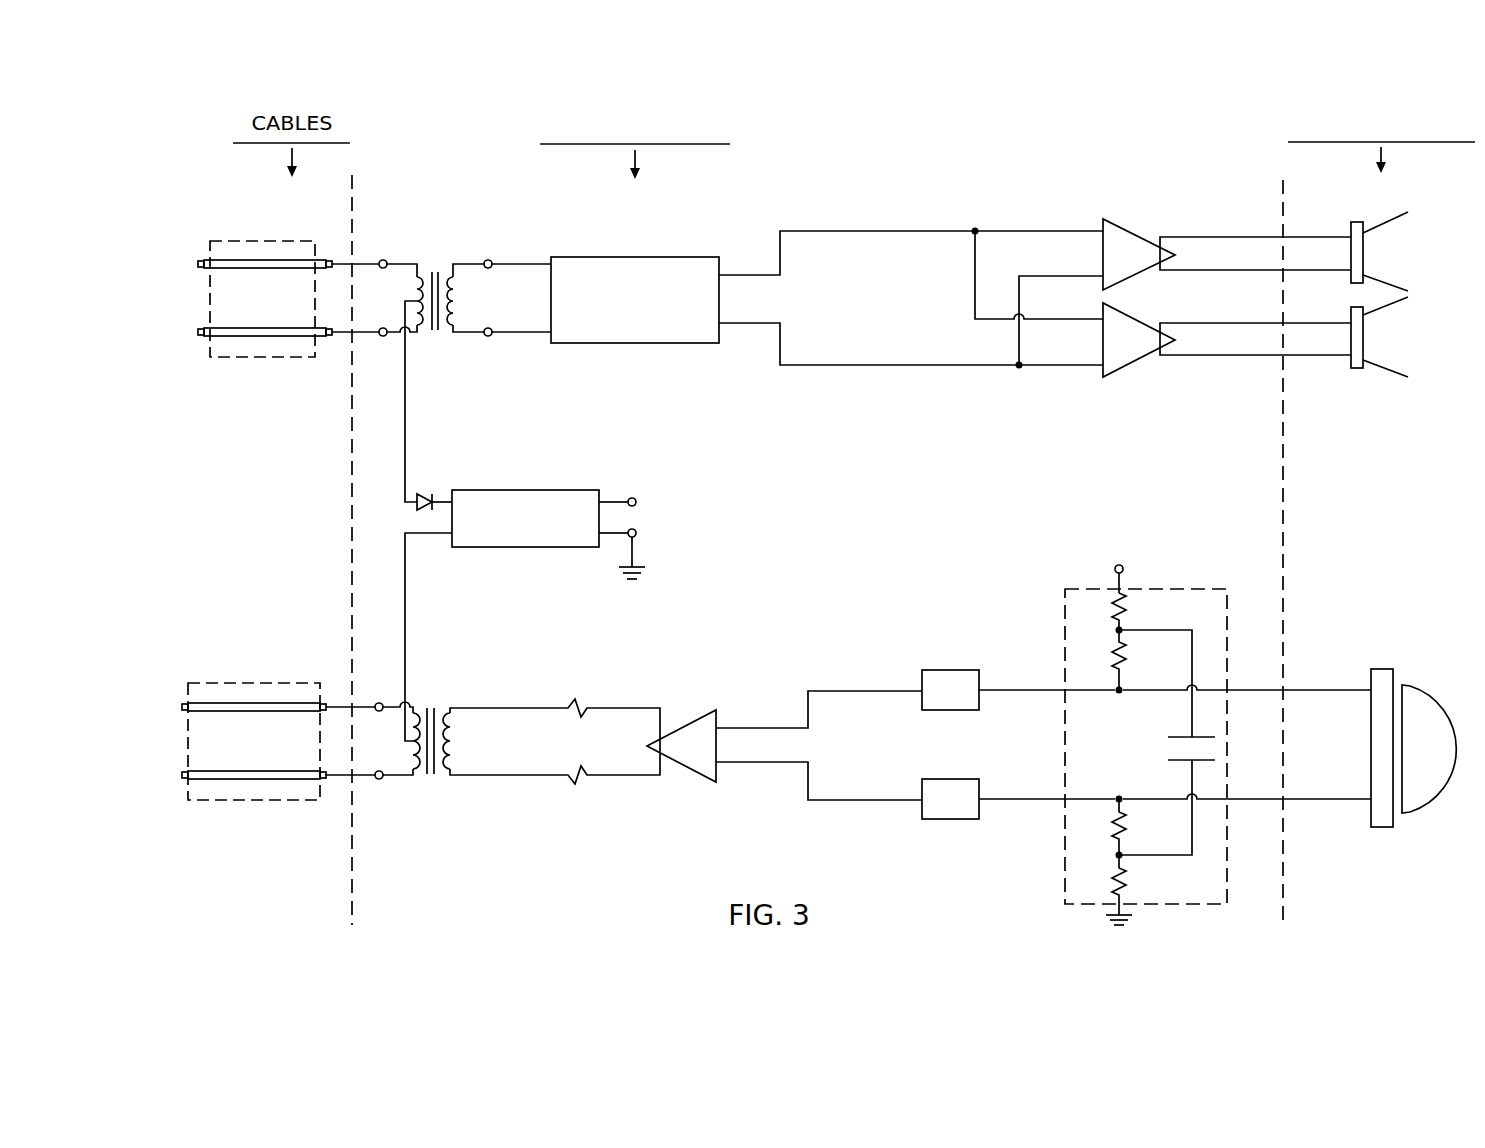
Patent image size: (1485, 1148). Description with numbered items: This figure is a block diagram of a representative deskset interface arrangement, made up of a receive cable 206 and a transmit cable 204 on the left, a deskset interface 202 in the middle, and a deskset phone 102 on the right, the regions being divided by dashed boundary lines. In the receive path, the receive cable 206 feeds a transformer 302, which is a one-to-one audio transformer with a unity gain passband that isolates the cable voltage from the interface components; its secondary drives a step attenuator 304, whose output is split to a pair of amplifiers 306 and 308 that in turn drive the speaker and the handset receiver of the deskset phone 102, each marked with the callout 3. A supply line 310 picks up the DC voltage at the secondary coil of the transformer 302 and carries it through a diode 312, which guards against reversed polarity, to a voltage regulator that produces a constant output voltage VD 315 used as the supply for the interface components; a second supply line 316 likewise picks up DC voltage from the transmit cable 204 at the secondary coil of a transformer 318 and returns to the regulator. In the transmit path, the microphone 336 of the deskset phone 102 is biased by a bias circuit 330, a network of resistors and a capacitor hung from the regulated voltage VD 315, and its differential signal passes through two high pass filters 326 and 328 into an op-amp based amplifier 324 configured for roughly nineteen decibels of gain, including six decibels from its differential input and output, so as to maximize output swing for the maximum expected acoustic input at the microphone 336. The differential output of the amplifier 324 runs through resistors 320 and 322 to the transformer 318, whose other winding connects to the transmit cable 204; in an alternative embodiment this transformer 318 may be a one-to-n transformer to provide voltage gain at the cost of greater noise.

The deskset phone 102 is at (1381, 132).
The deskset interface 202 is at (635, 135).
The transmit cable 204 is at (213, 683).
The receive cable 206 is at (228, 241).
The speaker / handset receiver 3 is at (1425, 263).
The transformer 302 is at (436, 256).
The step attenuator 304 is at (680, 257).
The amplifier 306 is at (1112, 222).
The amplifier 308 is at (1112, 376).
The supply line 310 is at (407, 402).
The diode 312 is at (432, 490).
The output voltage VD 315 is at (698, 521).
The supply line 316 is at (407, 616).
The transformer 318 is at (433, 702).
The resistor 320 is at (576, 699).
The resistor 322 is at (580, 784).
The amplifier 324 is at (716, 712).
The high pass filter 326 is at (958, 670).
The high pass filter 328 is at (958, 819).
The bias circuit 330 is at (1076, 589).
The microphone 336 is at (1420, 685).